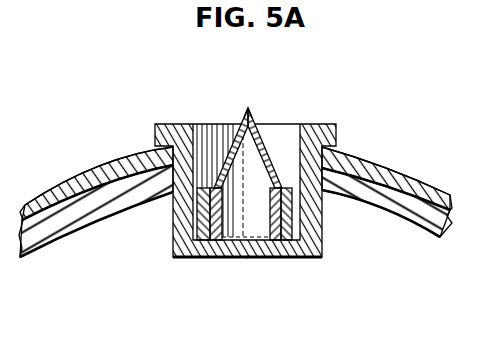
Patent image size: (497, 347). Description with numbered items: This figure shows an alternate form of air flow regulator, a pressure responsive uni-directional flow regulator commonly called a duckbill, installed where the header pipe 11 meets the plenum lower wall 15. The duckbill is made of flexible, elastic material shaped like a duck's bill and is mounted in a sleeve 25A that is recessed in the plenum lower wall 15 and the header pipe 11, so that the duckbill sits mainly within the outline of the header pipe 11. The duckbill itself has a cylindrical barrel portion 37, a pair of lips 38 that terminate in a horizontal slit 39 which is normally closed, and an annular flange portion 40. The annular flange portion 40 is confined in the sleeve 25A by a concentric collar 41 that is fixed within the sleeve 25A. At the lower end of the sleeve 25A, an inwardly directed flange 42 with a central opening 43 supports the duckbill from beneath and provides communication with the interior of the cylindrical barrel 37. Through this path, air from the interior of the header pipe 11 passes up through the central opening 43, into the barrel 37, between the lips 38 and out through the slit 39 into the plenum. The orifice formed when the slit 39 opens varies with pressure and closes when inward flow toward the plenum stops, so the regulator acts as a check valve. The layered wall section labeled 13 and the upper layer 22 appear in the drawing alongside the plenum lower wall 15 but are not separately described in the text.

The header pipe 11 is at (417, 213).
The inner flange layer 13 is at (163, 191).
The plenum lower wall 15 is at (410, 178).
The top laminate layer 22 is at (143, 152).
The sleeve 25A is at (322, 238).
The cylindrical barrel portion 37 is at (237, 180).
The lips 38 is at (235, 141).
The horizontal slit 39 is at (250, 110).
The annular flange portion 40 is at (293, 262).
The concentric collar 41 is at (198, 207).
The inwardly directed flange 42 is at (188, 258).
The central opening 43 is at (274, 175).